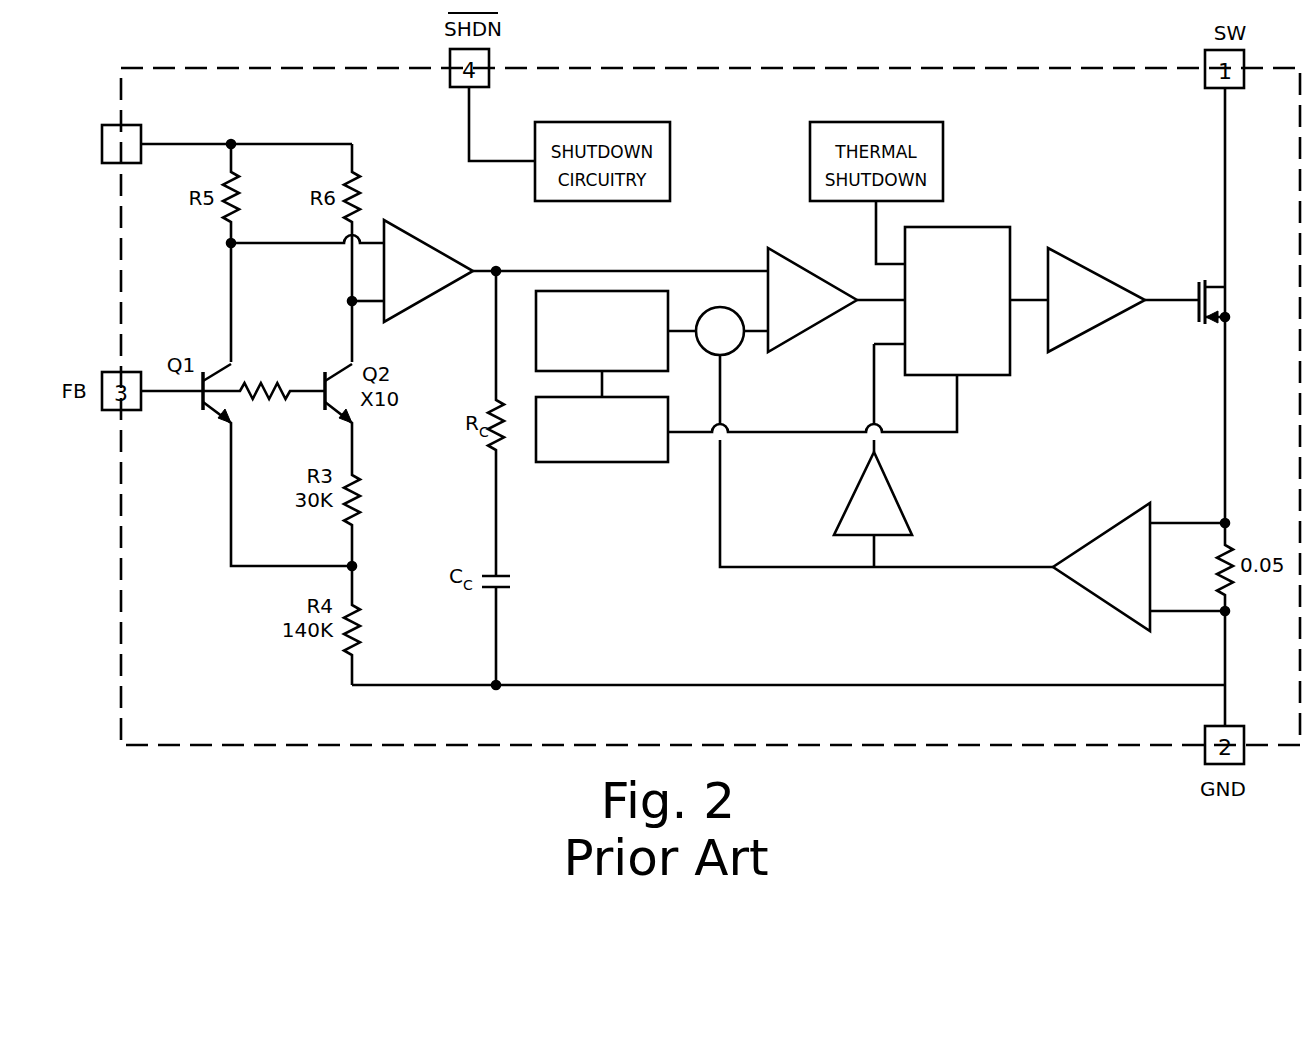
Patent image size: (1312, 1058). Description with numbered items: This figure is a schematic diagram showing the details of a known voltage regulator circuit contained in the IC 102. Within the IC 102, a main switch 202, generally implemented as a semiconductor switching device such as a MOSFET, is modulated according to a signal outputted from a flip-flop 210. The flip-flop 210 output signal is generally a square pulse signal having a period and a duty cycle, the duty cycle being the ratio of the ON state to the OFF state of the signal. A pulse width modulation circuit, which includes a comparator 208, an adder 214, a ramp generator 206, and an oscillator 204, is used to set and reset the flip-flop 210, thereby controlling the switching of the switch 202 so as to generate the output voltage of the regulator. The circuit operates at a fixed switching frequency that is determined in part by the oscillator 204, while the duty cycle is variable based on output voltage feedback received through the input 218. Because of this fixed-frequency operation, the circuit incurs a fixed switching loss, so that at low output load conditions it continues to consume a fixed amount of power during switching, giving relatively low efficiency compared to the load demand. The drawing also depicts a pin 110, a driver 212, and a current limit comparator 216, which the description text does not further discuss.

The IC 102 is at (857, 64).
The input voltage pin 110 is at (108, 124).
The main switch 202 is at (1222, 296).
The oscillator 204 is at (614, 463).
The ramp generator 206 is at (570, 289).
The comparator 208 is at (786, 262).
The flip-flop 210 is at (960, 226).
The driver 212 is at (1090, 268).
The adder 214 is at (738, 350).
The current limit comparator 216 is at (1108, 602).
The input 218 is at (414, 240).